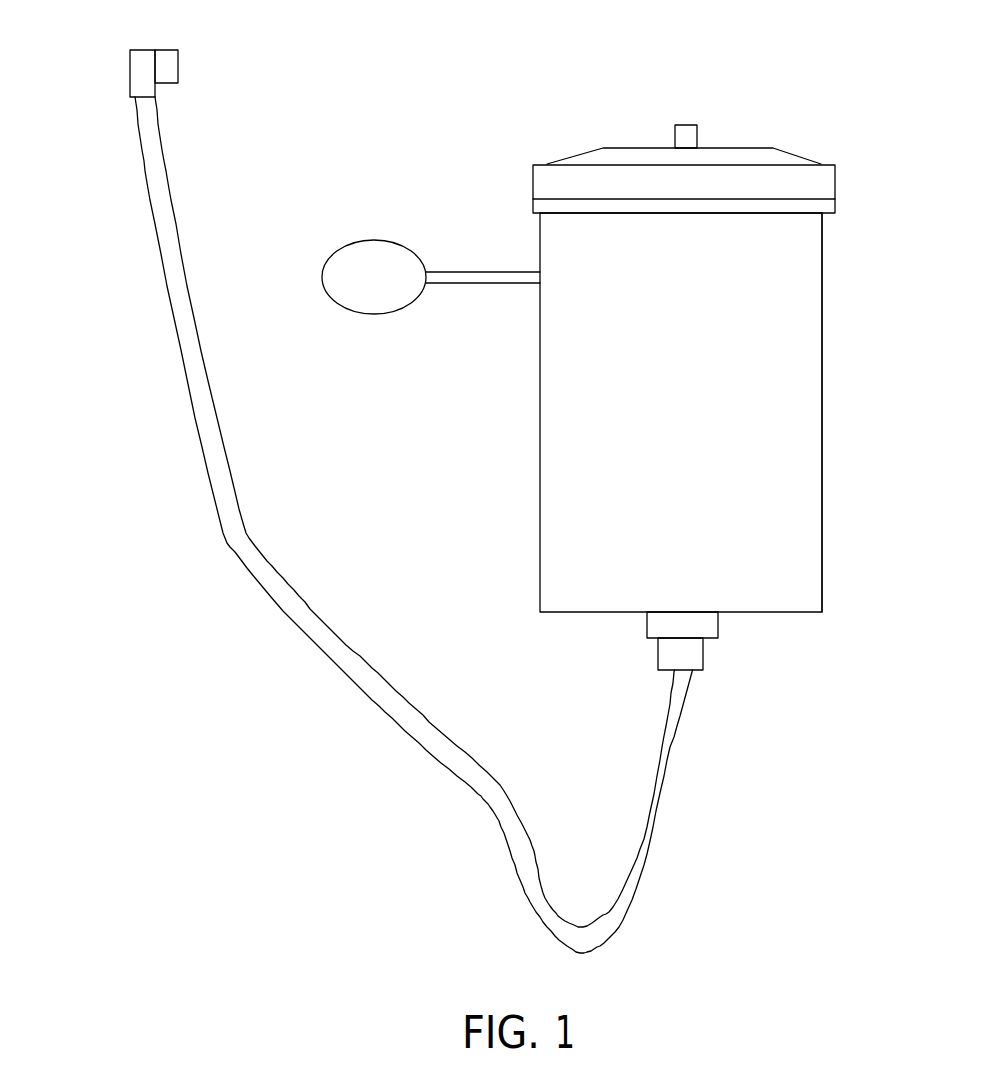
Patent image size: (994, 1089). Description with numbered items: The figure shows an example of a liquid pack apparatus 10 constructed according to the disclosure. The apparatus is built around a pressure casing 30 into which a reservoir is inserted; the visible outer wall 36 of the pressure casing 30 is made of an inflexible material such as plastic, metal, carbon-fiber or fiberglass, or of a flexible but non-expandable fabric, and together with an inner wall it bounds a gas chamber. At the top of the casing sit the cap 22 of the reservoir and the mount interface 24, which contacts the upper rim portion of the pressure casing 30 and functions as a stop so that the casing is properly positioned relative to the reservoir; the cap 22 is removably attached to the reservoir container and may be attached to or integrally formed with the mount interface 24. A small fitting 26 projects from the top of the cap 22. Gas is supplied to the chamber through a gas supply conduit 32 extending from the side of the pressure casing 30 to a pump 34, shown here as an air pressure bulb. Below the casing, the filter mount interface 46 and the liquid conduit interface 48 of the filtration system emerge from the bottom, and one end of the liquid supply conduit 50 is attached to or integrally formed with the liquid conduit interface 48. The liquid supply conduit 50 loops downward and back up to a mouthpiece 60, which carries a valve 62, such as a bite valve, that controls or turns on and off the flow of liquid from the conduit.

The liquid pack apparatus 10 is at (817, 70).
The cap 22 is at (835, 168).
The mount interface 24 is at (835, 205).
The cap / inlet port 26 is at (697, 125).
The pressure casing 30 is at (699, 415).
The gas supply conduit 32 is at (503, 287).
The pump 34 is at (385, 240).
The outer wall 36 is at (822, 407).
The filter mount interface 46 is at (719, 625).
The liquid conduit interface 48 is at (704, 660).
The liquid supply conduit 50 is at (315, 648).
The mouthpiece 60 is at (130, 81).
The valve 62 is at (178, 50).